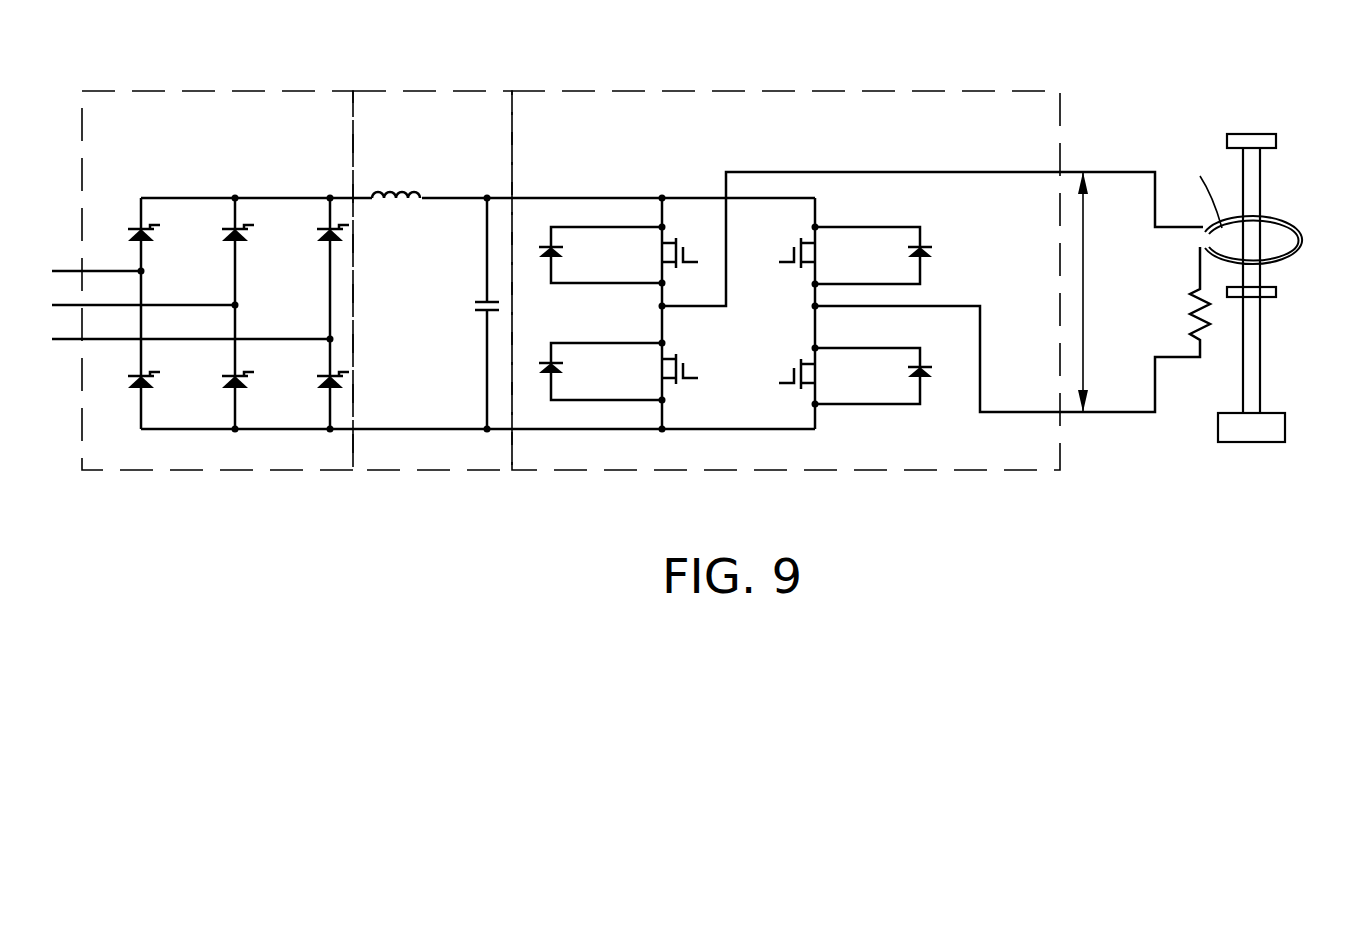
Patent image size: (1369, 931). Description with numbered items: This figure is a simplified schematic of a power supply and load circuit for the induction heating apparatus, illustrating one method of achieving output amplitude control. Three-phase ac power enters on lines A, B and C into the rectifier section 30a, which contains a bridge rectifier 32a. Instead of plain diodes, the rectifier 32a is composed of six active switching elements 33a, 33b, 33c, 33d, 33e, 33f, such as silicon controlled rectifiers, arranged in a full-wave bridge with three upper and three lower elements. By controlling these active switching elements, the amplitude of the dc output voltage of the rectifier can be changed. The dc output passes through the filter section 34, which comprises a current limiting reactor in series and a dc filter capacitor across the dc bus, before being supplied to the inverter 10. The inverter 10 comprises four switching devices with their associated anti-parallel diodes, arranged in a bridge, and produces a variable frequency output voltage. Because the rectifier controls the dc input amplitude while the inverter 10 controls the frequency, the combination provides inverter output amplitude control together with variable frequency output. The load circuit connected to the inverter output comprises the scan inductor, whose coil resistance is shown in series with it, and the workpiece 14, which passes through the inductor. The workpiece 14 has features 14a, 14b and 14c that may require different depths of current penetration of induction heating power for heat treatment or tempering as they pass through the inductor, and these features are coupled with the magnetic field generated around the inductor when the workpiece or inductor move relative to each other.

The inverter 10 is at (828, 90).
The workpiece 14 is at (1251, 186).
The feature 14a is at (1262, 141).
The feature 14b is at (1277, 291).
The feature 14c is at (1267, 426).
The rectifier section 30a is at (255, 90).
The rectifier 32a is at (232, 160).
The active switching element 33a is at (166, 220).
The active switching element 33b is at (220, 249).
The active switching element 33c is at (312, 220).
The active switching element 33d is at (167, 398).
The active switching element 33e is at (218, 366).
The active switching element 33f is at (312, 398).
The filter section 34 is at (471, 90).